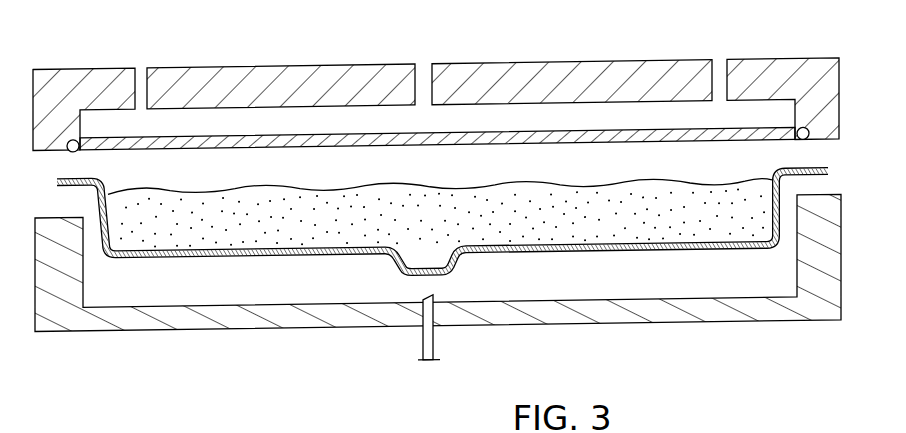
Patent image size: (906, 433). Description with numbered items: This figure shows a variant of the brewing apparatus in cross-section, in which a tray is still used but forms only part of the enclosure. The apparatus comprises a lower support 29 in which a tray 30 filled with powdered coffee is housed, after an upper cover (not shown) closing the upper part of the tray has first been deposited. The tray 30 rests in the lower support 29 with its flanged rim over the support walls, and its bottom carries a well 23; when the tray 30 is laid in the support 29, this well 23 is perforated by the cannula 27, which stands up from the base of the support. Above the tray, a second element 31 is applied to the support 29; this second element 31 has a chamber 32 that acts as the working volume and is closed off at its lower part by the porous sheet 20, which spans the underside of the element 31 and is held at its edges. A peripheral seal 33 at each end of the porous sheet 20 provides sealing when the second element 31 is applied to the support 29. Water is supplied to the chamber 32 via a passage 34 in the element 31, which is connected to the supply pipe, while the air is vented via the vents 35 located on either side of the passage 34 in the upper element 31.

The porous sheet 20 is at (262, 137).
The well 23 is at (425, 260).
The cannula 27 is at (420, 340).
The lower support 29 is at (842, 290).
The tray 30 is at (442, 276).
The second element 31 is at (842, 85).
The chamber 32 is at (543, 113).
The peripheral seal 33 is at (803, 140).
The passage 34 is at (424, 70).
The vents 35 is at (142, 70).